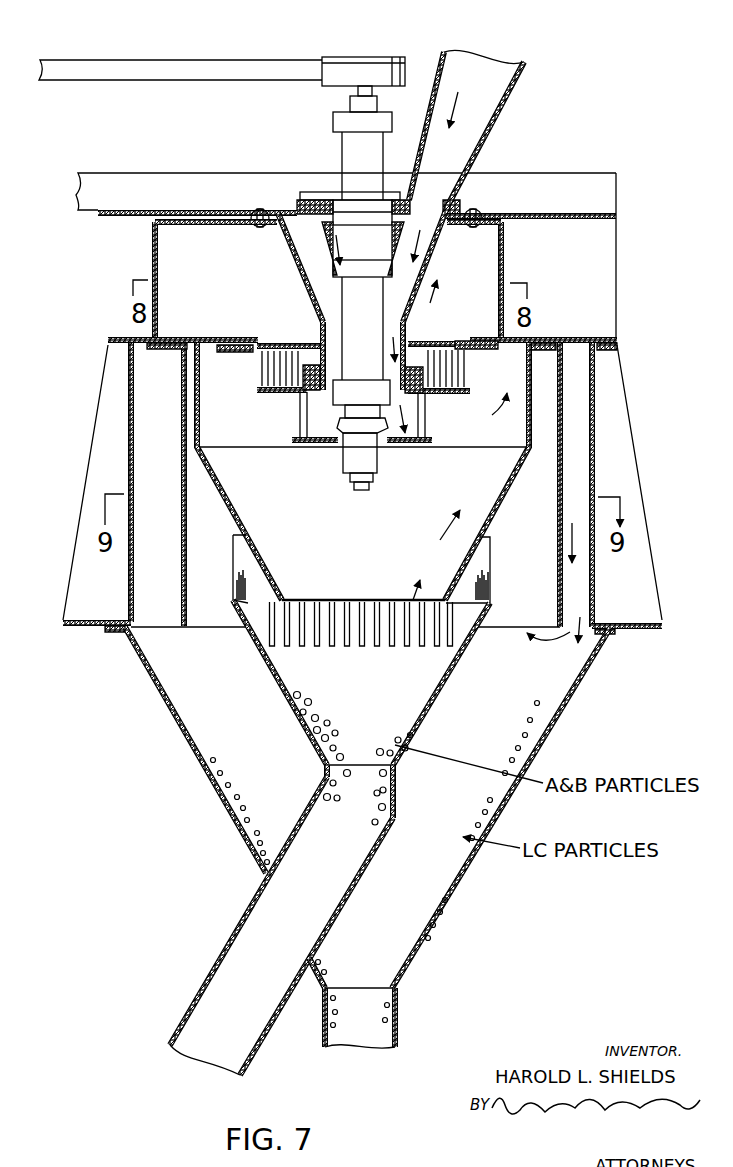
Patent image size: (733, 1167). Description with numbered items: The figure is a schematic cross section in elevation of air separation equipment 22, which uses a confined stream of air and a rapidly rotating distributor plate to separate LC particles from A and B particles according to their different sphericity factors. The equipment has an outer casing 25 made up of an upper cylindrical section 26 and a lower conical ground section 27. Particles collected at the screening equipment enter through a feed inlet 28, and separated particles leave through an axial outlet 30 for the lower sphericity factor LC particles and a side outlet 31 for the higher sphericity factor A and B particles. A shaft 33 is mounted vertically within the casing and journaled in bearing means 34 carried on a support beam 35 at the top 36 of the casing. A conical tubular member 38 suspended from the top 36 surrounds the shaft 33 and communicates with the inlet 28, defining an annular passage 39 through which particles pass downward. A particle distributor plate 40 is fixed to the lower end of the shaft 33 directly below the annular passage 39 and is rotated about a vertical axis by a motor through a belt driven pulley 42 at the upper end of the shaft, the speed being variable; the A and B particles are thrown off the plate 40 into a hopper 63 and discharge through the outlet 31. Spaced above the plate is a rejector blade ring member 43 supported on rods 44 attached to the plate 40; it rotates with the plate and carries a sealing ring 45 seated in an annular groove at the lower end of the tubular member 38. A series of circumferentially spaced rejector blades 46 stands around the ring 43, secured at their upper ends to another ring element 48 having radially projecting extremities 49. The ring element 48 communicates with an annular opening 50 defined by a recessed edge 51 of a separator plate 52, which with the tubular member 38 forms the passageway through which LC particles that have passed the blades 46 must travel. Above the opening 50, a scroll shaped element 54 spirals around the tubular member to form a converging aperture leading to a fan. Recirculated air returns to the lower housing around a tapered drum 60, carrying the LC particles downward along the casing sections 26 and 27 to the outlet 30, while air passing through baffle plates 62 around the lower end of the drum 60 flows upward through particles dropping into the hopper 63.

The air separation equipment 22 is at (74, 155).
The outer casing 25 is at (86, 456).
The upper cylindrical section 26 is at (130, 378).
The lower conical ground section 27 is at (167, 686).
The feed inlet 28 is at (520, 85).
The axial outlet 30 is at (398, 1024).
The side outlet 31 is at (206, 991).
The shaft 33 is at (357, 91).
The bearing means 34 is at (298, 203).
The support beam 35 is at (582, 176).
The top 36 is at (597, 220).
The conical tubular member 38 is at (437, 255).
The annular passage 39 is at (328, 333).
The particle distributor plate 40 is at (396, 448).
The belt driven pulley 42 is at (355, 56).
The rejector blade ring member 43 is at (440, 394).
The rods 44 is at (308, 420).
The sealing ring 45 is at (314, 374).
The rejector blades 46 is at (453, 359).
The ring element 48 is at (252, 352).
The radially projecting extremities 49 is at (216, 338).
The annular opening 50 is at (433, 340).
The recessed edge 51 is at (456, 339).
The separator plate 52 is at (593, 340).
The scroll shaped element 54 is at (505, 264).
The tapered drum 60 is at (502, 501).
The baffle plates 62 is at (491, 577).
The hopper 63 is at (434, 700).